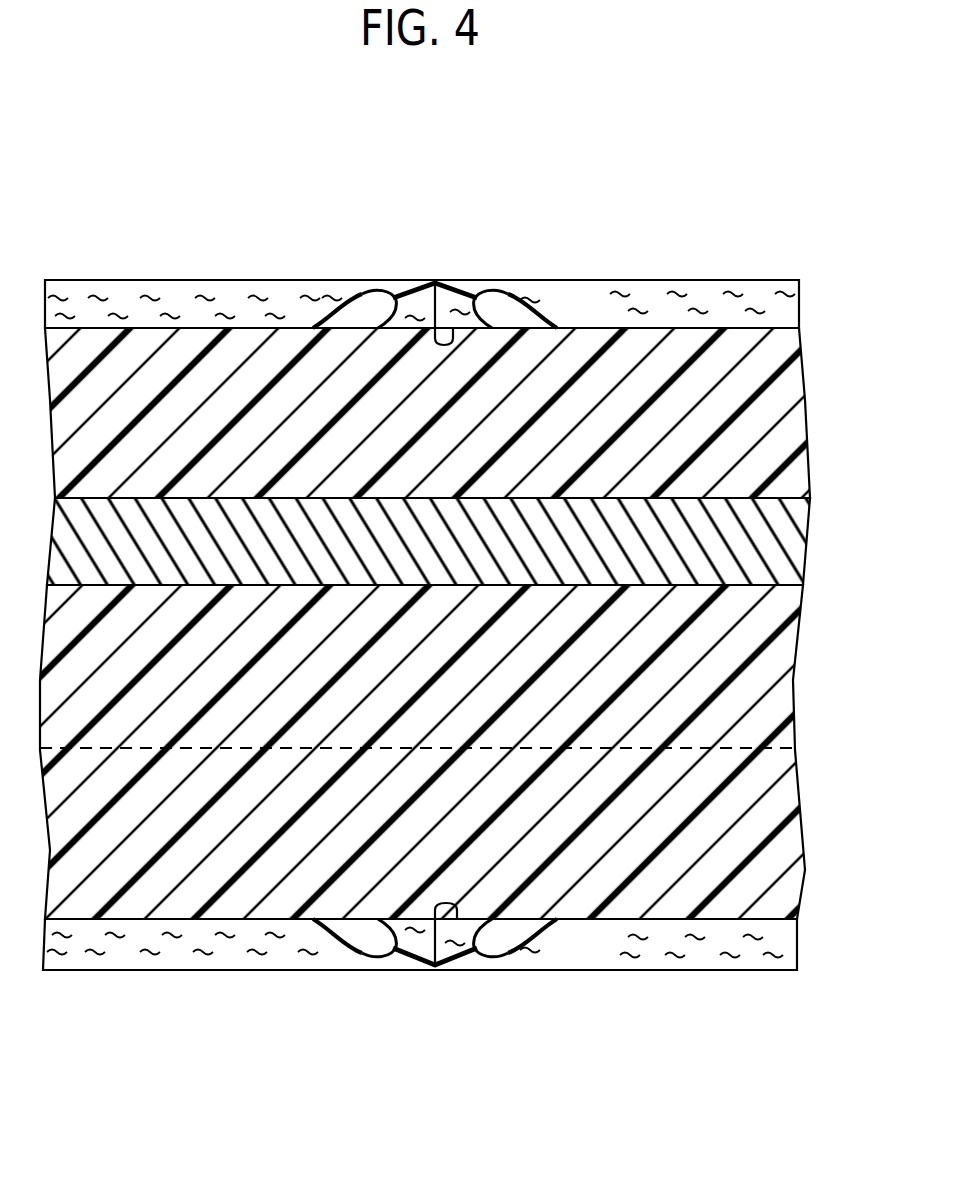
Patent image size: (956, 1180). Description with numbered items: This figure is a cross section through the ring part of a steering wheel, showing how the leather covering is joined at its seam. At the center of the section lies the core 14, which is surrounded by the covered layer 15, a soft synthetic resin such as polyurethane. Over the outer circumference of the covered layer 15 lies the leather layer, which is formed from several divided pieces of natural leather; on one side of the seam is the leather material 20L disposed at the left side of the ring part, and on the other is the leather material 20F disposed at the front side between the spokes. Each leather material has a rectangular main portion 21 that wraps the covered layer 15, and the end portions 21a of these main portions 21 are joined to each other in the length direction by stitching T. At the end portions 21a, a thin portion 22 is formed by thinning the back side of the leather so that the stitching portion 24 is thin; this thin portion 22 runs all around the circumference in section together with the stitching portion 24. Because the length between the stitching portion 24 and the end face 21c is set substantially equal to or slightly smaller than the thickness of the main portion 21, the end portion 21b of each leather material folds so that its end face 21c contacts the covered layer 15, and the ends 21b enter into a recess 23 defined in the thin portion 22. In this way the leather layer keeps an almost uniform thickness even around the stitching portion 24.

The core 14 is at (805, 540).
The covered layer 15 is at (805, 418).
The leather material 20L is at (108, 292).
The leather material 20F is at (738, 292).
The main portion 21 is at (434, 630).
The end portion 21a is at (458, 266).
The end portion 21b is at (390, 292).
The end face 21c is at (430, 306).
The thin portion 22 is at (352, 287).
The recess 23 is at (345, 312).
The stitching portion 24 is at (413, 313).
The stitching T is at (436, 280).